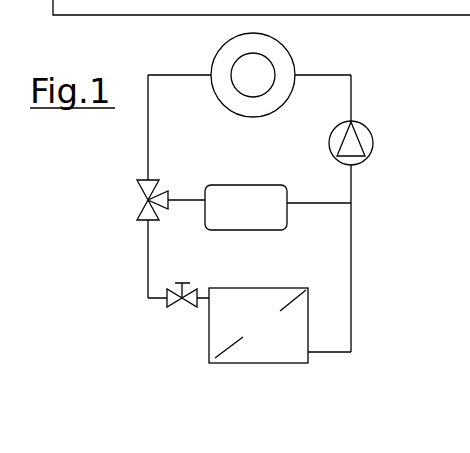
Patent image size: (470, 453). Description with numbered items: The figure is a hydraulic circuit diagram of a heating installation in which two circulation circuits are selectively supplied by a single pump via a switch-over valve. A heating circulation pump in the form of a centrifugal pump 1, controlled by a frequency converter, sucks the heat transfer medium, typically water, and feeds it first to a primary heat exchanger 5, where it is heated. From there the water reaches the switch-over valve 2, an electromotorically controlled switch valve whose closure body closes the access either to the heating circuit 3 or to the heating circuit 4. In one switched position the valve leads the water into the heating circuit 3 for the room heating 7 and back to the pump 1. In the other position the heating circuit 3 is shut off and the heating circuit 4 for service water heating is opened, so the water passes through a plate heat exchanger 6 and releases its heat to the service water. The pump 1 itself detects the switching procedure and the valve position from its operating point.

The centrifugal pump 1 is at (370, 128).
The switch-over valve 2 is at (145, 203).
The heating circuit for room heating 3 is at (148, 288).
The heating circuit for service water heating 4 is at (188, 198).
The primary heat exchanger 5 is at (297, 68).
The plate heat exchanger 6 is at (265, 185).
The room heating 7 is at (283, 288).